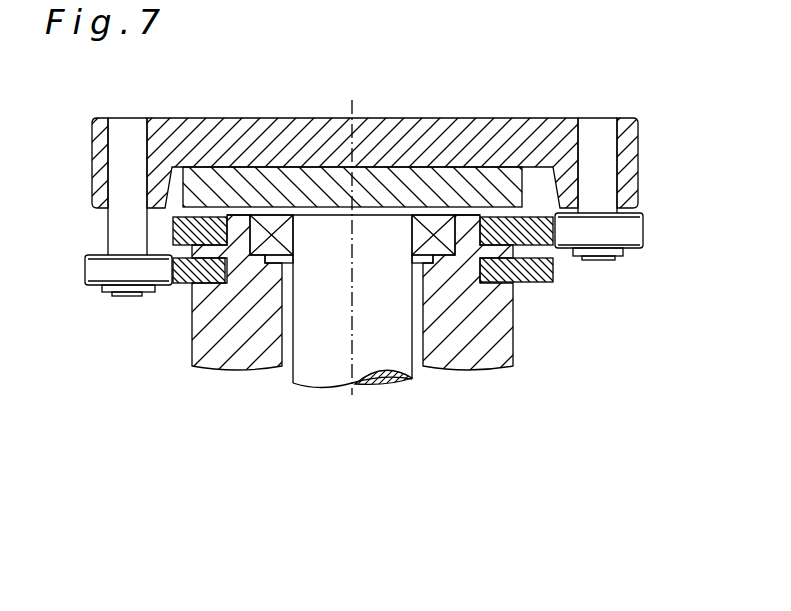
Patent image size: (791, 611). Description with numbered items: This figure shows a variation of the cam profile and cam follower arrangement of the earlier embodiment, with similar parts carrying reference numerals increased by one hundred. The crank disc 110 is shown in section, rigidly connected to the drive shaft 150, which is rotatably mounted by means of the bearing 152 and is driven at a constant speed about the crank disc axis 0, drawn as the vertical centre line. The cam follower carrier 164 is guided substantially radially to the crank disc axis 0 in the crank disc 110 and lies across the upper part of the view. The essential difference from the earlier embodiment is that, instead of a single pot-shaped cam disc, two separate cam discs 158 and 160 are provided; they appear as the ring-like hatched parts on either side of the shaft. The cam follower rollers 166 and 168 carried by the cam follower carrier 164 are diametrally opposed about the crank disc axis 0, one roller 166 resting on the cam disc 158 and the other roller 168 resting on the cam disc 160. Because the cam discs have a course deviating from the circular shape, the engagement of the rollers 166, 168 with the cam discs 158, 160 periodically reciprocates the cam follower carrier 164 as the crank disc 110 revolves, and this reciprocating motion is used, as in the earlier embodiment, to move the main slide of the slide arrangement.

The crank disc 110 is at (232, 183).
The cam follower carrier 164 is at (483, 125).
The bearing 152 is at (288, 233).
The cam disc 158 is at (183, 285).
The cam disc 160 is at (547, 243).
The cam follower roller 166 is at (95, 278).
The cam follower roller 168 is at (637, 230).
The drive shaft 150 is at (388, 350).
The crank disc axis 0 is at (352, 336).